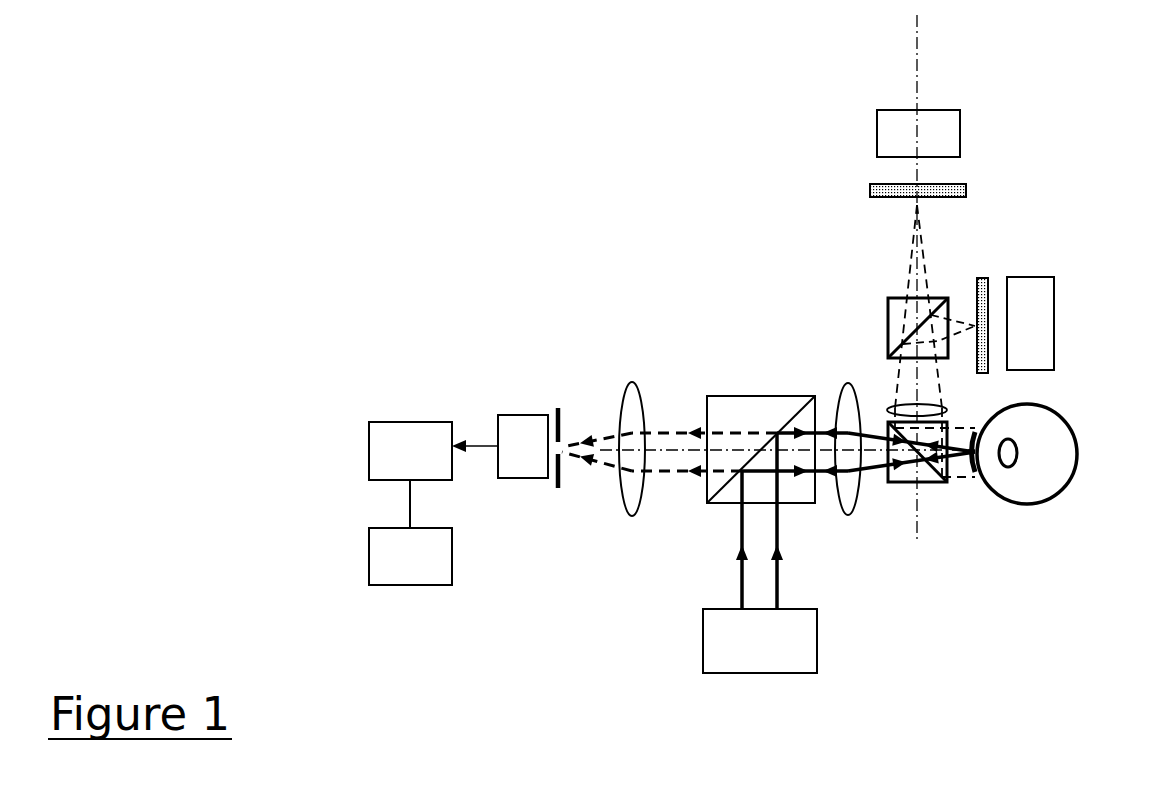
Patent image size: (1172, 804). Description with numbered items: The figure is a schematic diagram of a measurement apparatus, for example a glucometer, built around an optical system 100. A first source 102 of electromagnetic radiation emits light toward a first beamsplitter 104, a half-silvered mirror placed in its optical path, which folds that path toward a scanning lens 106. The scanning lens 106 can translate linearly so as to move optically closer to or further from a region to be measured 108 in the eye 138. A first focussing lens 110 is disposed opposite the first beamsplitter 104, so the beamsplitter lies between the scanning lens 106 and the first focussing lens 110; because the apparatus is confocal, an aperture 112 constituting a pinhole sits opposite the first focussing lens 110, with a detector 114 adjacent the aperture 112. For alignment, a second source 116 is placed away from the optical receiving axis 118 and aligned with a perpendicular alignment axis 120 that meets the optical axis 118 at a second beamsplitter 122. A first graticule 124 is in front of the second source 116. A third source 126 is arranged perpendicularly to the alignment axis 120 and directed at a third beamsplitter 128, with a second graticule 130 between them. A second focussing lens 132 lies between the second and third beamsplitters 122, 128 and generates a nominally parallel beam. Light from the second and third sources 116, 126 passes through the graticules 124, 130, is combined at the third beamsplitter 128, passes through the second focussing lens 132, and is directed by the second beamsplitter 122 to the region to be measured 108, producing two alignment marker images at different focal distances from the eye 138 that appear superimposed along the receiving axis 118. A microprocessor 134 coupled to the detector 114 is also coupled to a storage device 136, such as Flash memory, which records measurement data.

The optical system 100 is at (450, 152).
The first source 102 is at (739, 662).
The first beamsplitter 104 is at (724, 503).
The scanning lens 106 is at (845, 381).
The region to be measured 108 is at (970, 472).
The first focussing lens 110 is at (636, 381).
The aperture 112 is at (557, 482).
The detector 114 is at (523, 415).
The second source 116 is at (946, 109).
The optical receiving axis 118 is at (676, 451).
The perpendicular alignment axis 120 is at (916, 52).
The second beamsplitter 122 is at (931, 484).
The first graticule 124 is at (870, 192).
The third source 126 is at (1055, 323).
The third beamsplitter 128 is at (888, 308).
The second graticule 130 is at (985, 278).
The second focussing lens 132 is at (950, 407).
The microprocessor 134 is at (389, 468).
The storage device 136 is at (389, 573).
The eye 138 is at (1075, 472).